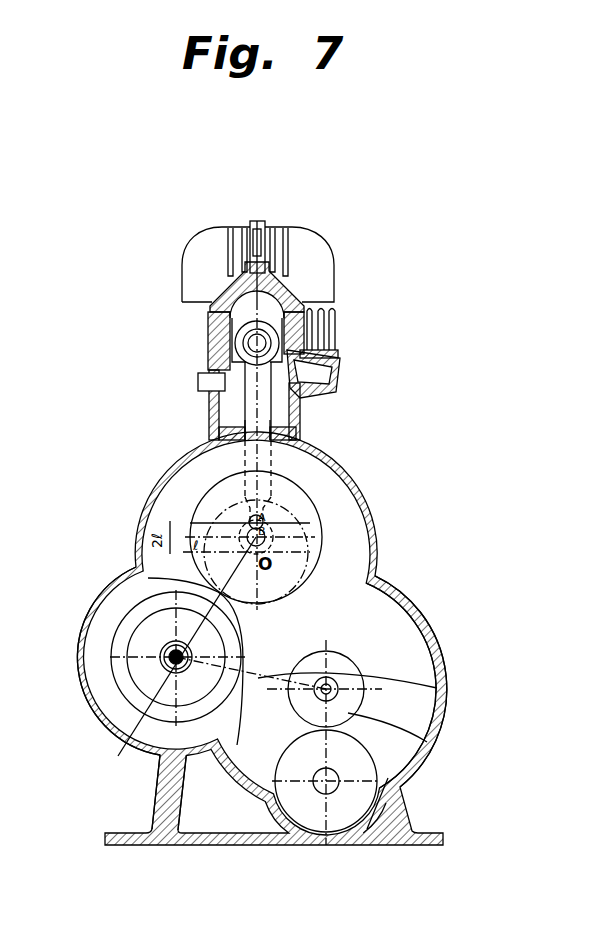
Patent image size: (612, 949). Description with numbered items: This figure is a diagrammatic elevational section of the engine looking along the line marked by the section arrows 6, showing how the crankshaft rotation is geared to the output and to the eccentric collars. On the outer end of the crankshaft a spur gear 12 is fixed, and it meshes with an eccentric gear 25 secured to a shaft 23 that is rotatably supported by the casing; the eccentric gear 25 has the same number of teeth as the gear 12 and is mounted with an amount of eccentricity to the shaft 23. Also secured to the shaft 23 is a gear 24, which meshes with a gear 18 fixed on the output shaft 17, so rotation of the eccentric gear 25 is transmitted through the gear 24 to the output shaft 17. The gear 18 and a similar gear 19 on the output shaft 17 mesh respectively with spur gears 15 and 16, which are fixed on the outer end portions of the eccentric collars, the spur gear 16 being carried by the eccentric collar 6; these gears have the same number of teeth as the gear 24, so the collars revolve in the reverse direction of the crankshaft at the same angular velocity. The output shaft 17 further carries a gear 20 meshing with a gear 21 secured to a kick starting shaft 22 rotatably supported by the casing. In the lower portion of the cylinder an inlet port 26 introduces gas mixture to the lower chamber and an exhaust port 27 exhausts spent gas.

The eccentric collar 6 is at (257, 221).
The spur gear 12 is at (215, 497).
The spur gear 15 is at (156, 598).
The spur gear 16 is at (176, 657).
The output shaft 17 is at (382, 688).
The spur gear 18 is at (374, 598).
The spur gear 19 is at (401, 685).
The gear 20 is at (348, 713).
The gear 21 is at (368, 766).
The kick starting shaft 22 is at (388, 806).
The shaft 23 is at (171, 683).
The gear 24 is at (138, 645).
The eccentric gear 25 is at (136, 582).
The inlet port 26 is at (196, 383).
The exhaust port 27 is at (338, 380).